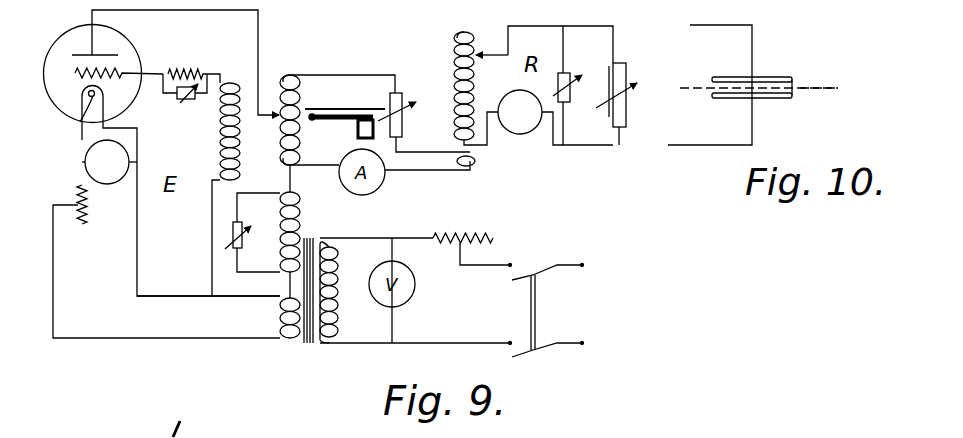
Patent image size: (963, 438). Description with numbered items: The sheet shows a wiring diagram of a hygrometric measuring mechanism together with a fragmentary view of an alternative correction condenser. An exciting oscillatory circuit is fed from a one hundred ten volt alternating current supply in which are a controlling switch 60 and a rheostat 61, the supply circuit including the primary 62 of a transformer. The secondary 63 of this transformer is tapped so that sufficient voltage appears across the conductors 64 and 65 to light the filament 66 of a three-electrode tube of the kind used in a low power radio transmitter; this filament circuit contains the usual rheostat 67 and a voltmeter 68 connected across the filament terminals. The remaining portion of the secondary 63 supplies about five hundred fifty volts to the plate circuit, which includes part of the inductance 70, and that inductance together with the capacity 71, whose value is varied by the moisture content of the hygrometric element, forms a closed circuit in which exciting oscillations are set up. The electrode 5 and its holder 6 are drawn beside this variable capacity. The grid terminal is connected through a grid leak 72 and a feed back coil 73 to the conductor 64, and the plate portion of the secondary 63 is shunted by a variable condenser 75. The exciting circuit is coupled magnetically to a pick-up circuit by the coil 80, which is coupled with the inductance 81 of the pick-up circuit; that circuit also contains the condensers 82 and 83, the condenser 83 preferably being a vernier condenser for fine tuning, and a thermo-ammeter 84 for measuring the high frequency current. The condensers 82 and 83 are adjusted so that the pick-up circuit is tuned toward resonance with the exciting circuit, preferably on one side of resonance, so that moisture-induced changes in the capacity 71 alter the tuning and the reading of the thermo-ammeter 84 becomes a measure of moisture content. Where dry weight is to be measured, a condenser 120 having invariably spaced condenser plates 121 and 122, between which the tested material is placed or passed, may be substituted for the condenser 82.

In FIG. 9, the electrode 5 is at (371, 102).
In FIG. 10, the electrode 5 is at (836, 85).
In FIG. 9, the electrode holder 6 is at (325, 113).
In FIG. 9, the controlling switch 60 is at (537, 310).
In FIG. 9, the rheostat 61 is at (495, 240).
In FIG. 9, the primary 62 is at (338, 309).
In FIG. 9, the secondary 63 is at (302, 344).
In FIG. 9, the conductor 64 is at (190, 296).
In FIG. 9, the conductor 65 is at (173, 338).
In FIG. 9, the filament 66 is at (79, 122).
In FIG. 9, the rheostat 67 is at (82, 228).
In FIG. 9, the voltmeter 68 is at (113, 185).
In FIG. 9, the inductance 70 is at (284, 72).
In FIG. 9, the capacity 71 is at (404, 95).
In FIG. 9, the grid leak 72 is at (191, 70).
In FIG. 9, the feed back coil 73 is at (219, 125).
In FIG. 9, the variable condenser 75 is at (242, 226).
In FIG. 9, the coil 80 is at (466, 172).
In FIG. 9, the inductance 81 is at (456, 34).
In FIG. 9, the condenser 82 is at (621, 63).
In FIG. 9, the vernier condenser 83 is at (565, 74).
In FIG. 9, the thermo-ammeter 84 is at (505, 95).
In FIG. 10, the condenser 120 is at (790, 78).
In FIG. 10, the condenser plate 121 is at (725, 77).
In FIG. 10, the condenser plate 122 is at (742, 100).